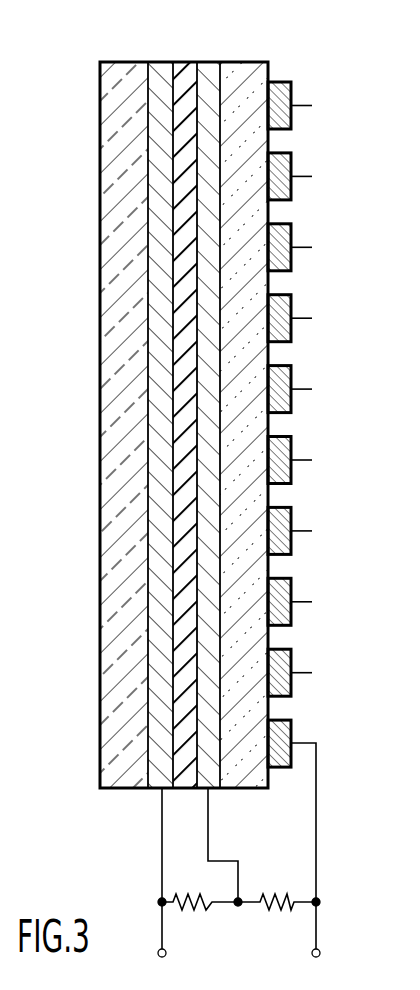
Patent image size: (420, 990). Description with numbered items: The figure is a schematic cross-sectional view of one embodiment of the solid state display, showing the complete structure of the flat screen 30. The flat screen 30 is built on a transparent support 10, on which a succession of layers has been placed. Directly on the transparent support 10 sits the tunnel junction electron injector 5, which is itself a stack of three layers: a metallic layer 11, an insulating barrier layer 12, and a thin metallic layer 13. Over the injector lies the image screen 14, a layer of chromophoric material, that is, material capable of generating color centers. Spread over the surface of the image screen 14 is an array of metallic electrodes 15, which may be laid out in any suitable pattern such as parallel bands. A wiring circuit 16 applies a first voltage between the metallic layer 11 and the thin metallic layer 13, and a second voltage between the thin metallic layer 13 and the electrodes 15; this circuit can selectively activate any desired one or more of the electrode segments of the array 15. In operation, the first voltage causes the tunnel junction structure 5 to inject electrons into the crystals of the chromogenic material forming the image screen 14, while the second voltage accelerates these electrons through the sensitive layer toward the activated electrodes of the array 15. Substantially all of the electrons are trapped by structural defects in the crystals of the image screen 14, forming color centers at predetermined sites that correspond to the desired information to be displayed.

The flat screen 30 is at (91, 92).
The tunnel junction electron injector 5 is at (182, 401).
The transparent support 10 is at (106, 180).
The metallic layer 11 is at (158, 236).
The insulating barrier layer 12 is at (176, 277).
The thin metallic layer 13 is at (205, 372).
The image screen 14 is at (254, 78).
The metallic electrodes 15 is at (291, 265).
The wiring circuit 16 is at (153, 850).